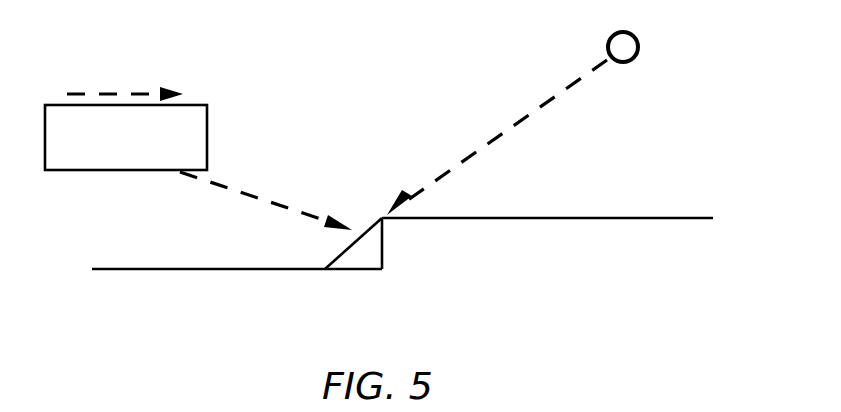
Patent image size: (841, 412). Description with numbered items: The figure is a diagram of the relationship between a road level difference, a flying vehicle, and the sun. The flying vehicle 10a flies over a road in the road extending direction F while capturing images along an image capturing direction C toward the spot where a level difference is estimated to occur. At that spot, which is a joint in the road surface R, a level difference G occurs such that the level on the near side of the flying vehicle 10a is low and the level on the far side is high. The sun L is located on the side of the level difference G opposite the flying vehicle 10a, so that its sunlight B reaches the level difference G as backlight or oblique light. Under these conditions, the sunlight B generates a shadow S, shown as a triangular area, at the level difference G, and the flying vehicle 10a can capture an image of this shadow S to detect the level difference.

The flying vehicle 10a is at (207, 122).
The road extending direction F is at (120, 94).
The image capturing direction C is at (257, 198).
The sunlight B is at (502, 128).
The sun L is at (641, 47).
The road surface R is at (237, 269).
The shadow S is at (367, 257).
The level difference G is at (382, 269).